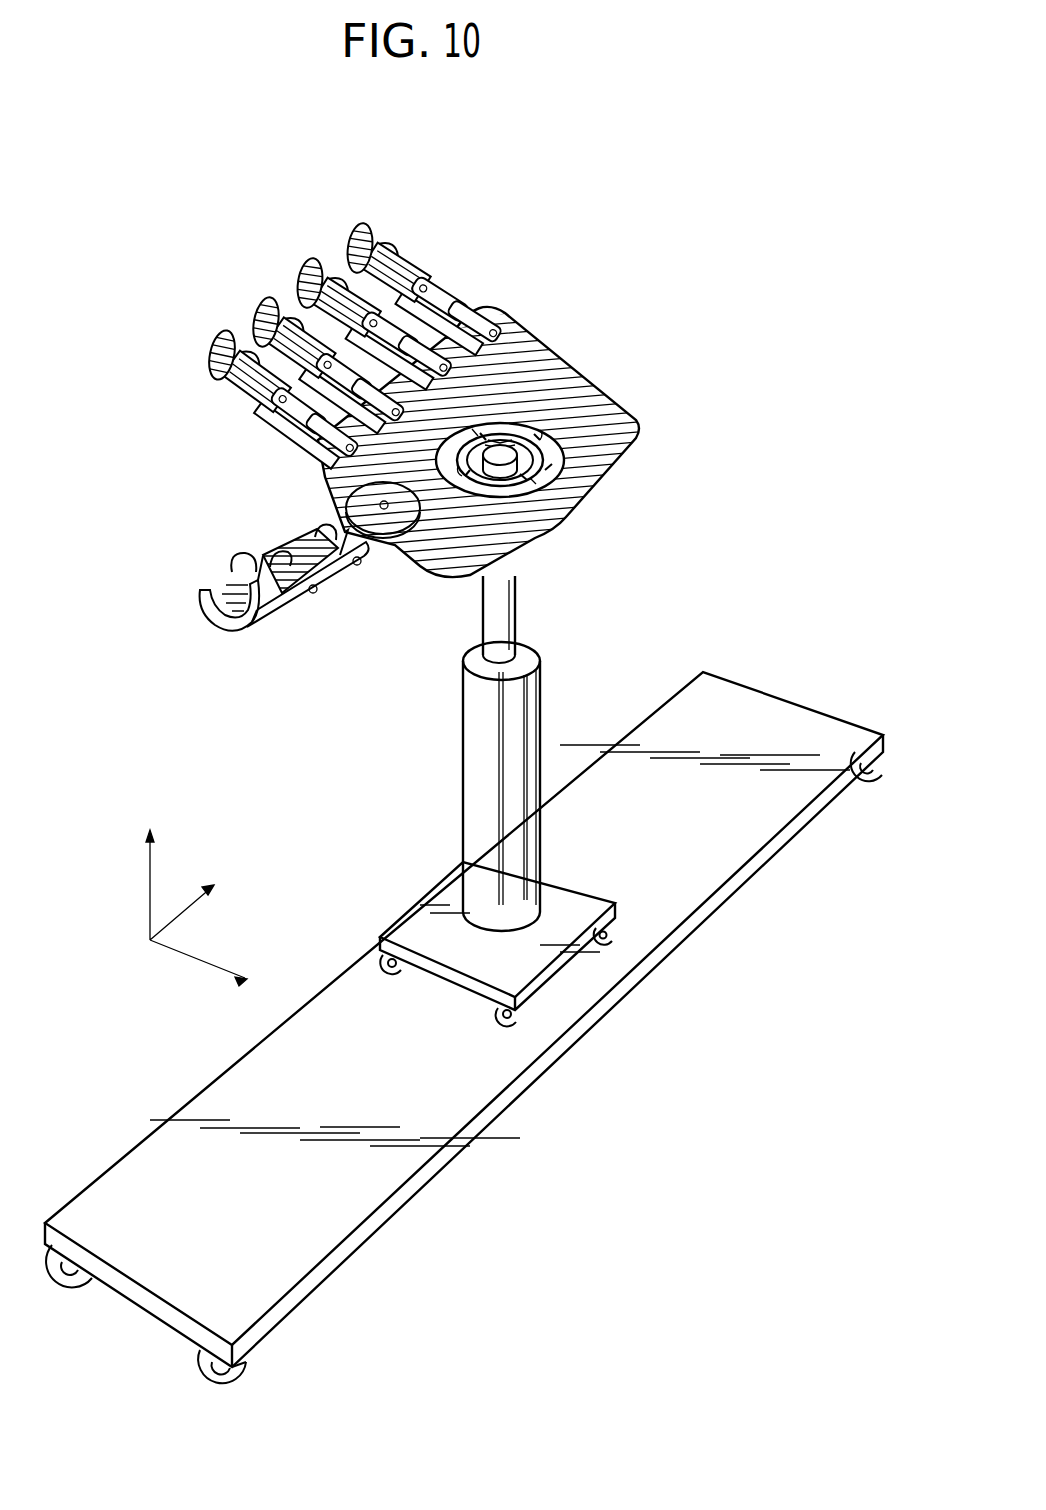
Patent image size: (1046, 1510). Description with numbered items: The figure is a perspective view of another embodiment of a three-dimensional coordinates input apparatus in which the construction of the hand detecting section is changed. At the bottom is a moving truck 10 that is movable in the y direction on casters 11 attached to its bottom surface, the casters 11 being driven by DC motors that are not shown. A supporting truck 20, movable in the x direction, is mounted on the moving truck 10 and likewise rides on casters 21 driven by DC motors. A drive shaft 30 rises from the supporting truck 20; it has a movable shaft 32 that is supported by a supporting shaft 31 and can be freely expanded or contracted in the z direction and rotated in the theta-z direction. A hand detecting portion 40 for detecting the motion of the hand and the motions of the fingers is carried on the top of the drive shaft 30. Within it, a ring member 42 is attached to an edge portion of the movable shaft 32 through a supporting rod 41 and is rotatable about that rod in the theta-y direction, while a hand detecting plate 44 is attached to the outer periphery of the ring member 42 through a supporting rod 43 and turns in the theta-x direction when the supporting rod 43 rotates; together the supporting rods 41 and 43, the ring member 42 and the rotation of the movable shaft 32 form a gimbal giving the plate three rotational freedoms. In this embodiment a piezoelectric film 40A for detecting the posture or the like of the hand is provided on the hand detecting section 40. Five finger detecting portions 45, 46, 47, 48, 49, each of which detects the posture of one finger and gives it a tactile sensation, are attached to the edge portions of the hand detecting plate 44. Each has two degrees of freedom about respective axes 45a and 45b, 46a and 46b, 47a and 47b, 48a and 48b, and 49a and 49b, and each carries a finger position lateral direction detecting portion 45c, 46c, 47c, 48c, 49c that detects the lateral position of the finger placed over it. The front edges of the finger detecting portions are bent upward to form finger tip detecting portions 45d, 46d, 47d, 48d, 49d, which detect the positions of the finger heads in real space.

The moving truck 10 is at (158, 1153).
The casters 11 is at (78, 1272).
The supporting truck 20 is at (602, 868).
The casters 21 is at (384, 962).
The drive shaft 30 is at (522, 753).
The supporting shaft 31 is at (480, 791).
The movable shaft 32 is at (505, 618).
The hand detecting portion 40 is at (391, 565).
The piezoelectric film 40A is at (576, 491).
The supporting rod 41 is at (480, 440).
The ring member 42 is at (570, 440).
The supporting rod 43 is at (545, 440).
The hand detecting plate 44 is at (600, 425).
The finger detecting portion 45 is at (265, 605).
The axis 45a is at (320, 636).
The axis 45b is at (361, 565).
The finger position lateral direction detecting portion 45c is at (253, 575).
The finger tip detecting portion 45d is at (206, 600).
The finger detecting portion 46 is at (222, 416).
The axis 46a is at (280, 423).
The axis 46b is at (312, 462).
The finger position lateral direction detecting portion 46c is at (240, 400).
The finger tip detecting portion 46d is at (217, 353).
The finger detecting portion 47 is at (303, 360).
The axis 47a is at (320, 446).
The axis 47b is at (363, 453).
The finger position lateral direction detecting portion 47c is at (285, 318).
The finger tip detecting portion 47d is at (252, 318).
The finger detecting portion 48 is at (419, 280).
The axis 48a is at (395, 277).
The axis 48b is at (495, 359).
The finger position lateral direction detecting portion 48c is at (344, 275).
The finger tip detecting portion 48d is at (297, 257).
The finger detecting portion 49 is at (464, 244).
The axis 49a is at (440, 295).
The axis 49b is at (470, 323).
The finger position lateral direction detecting portion 49c is at (385, 240).
The finger tip detecting portion 49d is at (384, 236).